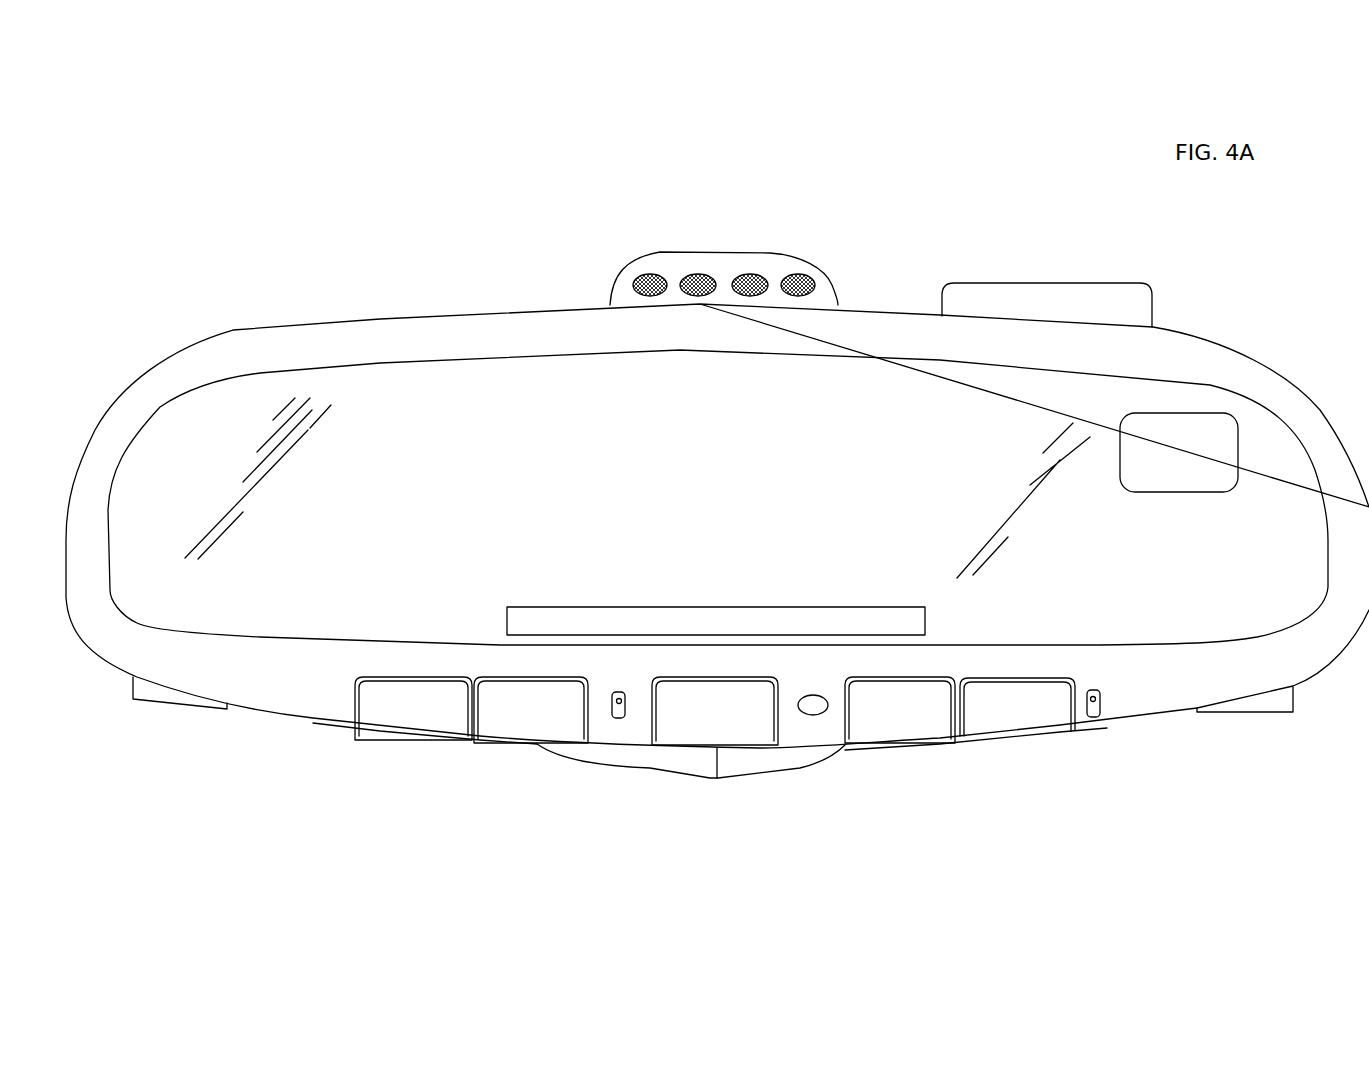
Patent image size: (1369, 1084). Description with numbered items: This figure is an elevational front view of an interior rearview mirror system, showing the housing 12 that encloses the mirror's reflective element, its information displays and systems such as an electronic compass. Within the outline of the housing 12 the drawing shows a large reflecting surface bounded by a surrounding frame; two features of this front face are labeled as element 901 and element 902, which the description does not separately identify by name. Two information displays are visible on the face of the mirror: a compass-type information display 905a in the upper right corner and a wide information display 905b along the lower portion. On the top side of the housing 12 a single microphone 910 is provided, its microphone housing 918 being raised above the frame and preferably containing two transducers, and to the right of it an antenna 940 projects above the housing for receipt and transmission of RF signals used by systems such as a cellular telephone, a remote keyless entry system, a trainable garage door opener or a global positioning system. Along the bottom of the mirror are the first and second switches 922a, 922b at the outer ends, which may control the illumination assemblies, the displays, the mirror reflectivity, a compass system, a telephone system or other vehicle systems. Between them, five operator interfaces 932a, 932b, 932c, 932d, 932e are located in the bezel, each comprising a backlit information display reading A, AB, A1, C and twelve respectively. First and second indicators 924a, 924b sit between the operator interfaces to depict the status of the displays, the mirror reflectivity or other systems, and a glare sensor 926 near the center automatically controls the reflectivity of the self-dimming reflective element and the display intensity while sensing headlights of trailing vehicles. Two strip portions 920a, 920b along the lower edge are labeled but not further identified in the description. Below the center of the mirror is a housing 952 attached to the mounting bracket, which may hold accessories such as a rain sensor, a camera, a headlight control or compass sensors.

The housing 12 is at (223, 332).
The reflective element 901 is at (495, 365).
The bezel 902 is at (375, 335).
The microphone 910 is at (684, 238).
The microphone housing 918 is at (778, 258).
The antenna 940 is at (1093, 290).
The information display 905a is at (1213, 428).
The information display 905b is at (772, 612).
The bezel strip 920a is at (347, 732).
The bezel strip 920b is at (1042, 740).
The first switch 922a is at (155, 693).
The second switch 922b is at (1213, 715).
The first indicator 924a is at (617, 718).
The second indicator 924b is at (1088, 717).
The glare sensor 926 is at (803, 708).
The first operator interface 932a is at (423, 717).
The second operator interface 932b is at (518, 730).
The third operator interface 932c is at (703, 735).
The fourth operator interface 932d is at (873, 727).
The fifth operator interface 932e is at (968, 718).
The housing 952 is at (735, 767).